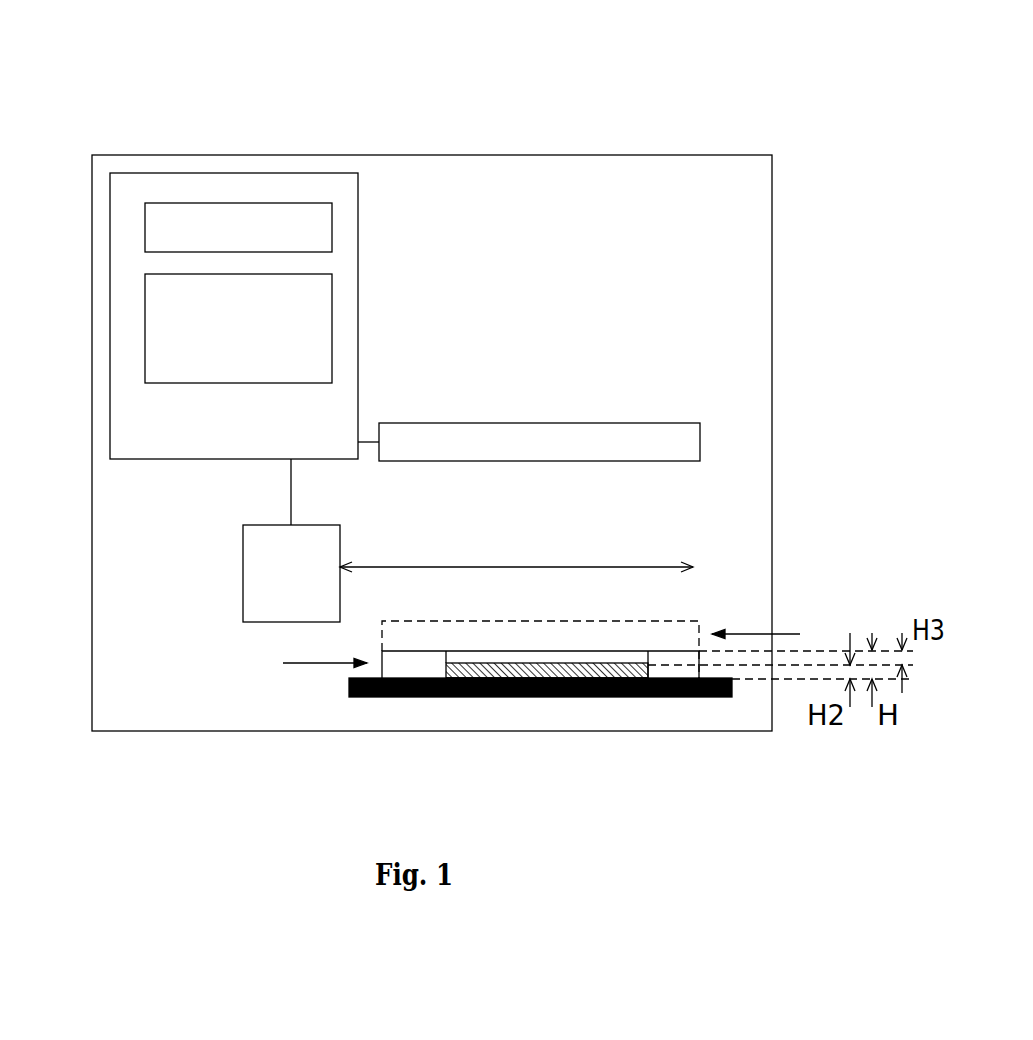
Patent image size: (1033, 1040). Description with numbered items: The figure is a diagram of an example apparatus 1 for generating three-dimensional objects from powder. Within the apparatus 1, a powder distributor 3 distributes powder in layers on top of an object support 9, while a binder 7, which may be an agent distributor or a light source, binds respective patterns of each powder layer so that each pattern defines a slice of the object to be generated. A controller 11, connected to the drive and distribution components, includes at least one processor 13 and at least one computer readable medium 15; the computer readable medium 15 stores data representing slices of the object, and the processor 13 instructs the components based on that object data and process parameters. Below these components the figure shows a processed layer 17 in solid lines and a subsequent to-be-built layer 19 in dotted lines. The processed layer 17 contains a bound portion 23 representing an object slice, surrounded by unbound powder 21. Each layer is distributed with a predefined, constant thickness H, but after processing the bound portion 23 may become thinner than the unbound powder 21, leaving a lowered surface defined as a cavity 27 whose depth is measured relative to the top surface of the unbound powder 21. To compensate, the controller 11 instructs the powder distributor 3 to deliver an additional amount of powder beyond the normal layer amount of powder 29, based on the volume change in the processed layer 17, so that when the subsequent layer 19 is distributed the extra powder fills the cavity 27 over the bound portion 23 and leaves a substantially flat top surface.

The apparatus 1 is at (152, 98).
The powder distributor 3 is at (298, 588).
The binder 7 is at (550, 457).
The object support 9 is at (687, 697).
The controller 11 is at (285, 173).
The processor 13 is at (145, 332).
The computer readable medium 15 is at (145, 213).
The processed layer 17 is at (306, 663).
The subsequent to-be-built layer 19 is at (773, 630).
The unbound powder 21 is at (667, 658).
The bound portion 23 is at (587, 697).
The cavity 27 is at (498, 658).
The predefined layer amount of powder 29 is at (577, 635).